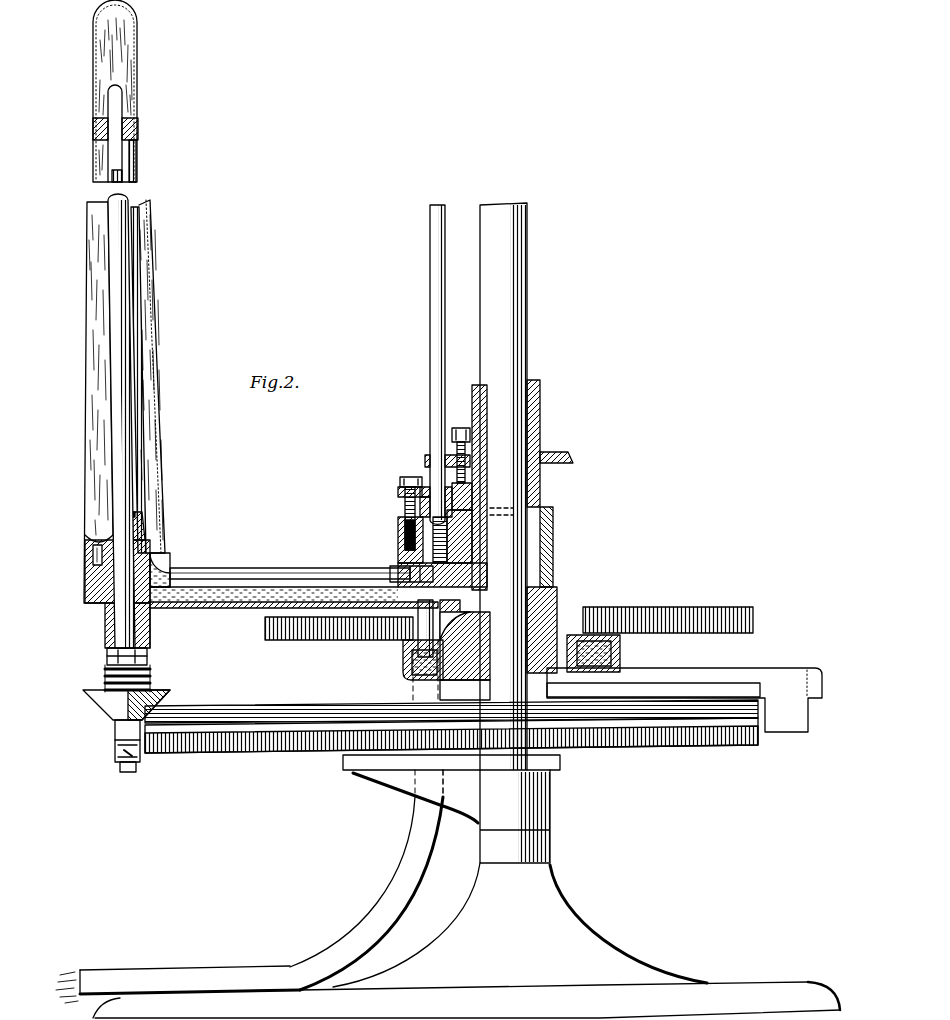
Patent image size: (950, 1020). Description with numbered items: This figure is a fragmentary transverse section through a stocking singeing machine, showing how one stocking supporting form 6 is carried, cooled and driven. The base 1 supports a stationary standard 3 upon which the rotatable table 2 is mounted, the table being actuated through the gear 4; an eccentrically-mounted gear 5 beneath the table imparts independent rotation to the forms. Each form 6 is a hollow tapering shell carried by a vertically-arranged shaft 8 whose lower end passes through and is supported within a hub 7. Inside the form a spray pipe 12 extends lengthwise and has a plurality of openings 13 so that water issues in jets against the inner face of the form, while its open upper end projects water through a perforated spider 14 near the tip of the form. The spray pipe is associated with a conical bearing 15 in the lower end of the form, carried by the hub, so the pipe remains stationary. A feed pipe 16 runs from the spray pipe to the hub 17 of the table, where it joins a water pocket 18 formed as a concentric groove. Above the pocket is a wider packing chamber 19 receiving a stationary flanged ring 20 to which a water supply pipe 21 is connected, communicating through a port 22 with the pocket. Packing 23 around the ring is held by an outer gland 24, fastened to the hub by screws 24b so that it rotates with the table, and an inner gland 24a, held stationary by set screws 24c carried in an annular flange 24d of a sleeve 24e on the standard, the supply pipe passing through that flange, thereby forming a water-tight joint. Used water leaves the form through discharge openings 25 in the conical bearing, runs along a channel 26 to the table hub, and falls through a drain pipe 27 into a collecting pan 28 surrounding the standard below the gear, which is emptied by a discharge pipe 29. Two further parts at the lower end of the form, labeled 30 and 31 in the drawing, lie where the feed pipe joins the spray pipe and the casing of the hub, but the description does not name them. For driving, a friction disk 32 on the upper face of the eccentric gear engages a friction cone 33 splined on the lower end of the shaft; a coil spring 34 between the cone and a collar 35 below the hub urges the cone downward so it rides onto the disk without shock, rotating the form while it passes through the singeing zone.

The base 1 is at (510, 998).
The rotatable table 2 is at (231, 609).
The standard 3 is at (528, 343).
The gear 4 is at (342, 641).
The eccentrically-mounted gear 5 is at (310, 750).
The supporting form 6 is at (151, 201).
The hub 7 is at (105, 628).
The shaft 8 is at (114, 180).
The spray pipe 12 is at (145, 278).
The openings 13 is at (137, 157).
The spider 14 is at (95, 132).
The conical bearing 15 is at (112, 522).
The feed pipe 16 is at (250, 571).
The hub of the table 17 is at (398, 524).
The water pocket 18 is at (445, 577).
The packing chamber 19 is at (448, 537).
The flanged ring 20 is at (400, 553).
The water supply pipe 21 is at (438, 410).
The port 22 is at (474, 512).
The packing 23 is at (420, 512).
The outer gland 24 is at (400, 486).
The inner gland 24a is at (541, 489).
The screws 24b is at (402, 479).
The set screws 24c is at (471, 434).
The annular flange 24d is at (574, 460).
The sleeve 24e is at (541, 450).
The discharge openings 25 is at (97, 551).
The channel 26 is at (312, 590).
The drain pipe 27 is at (418, 642).
The collecting pan 28 is at (405, 679).
The discharge pipe 29 is at (420, 849).
The elbow 30 is at (166, 556).
The casing 31 is at (90, 565).
The friction disk 32 is at (281, 708).
The friction cone 33 is at (112, 706).
The coil spring 34 is at (150, 669).
The collar 35 is at (108, 660).